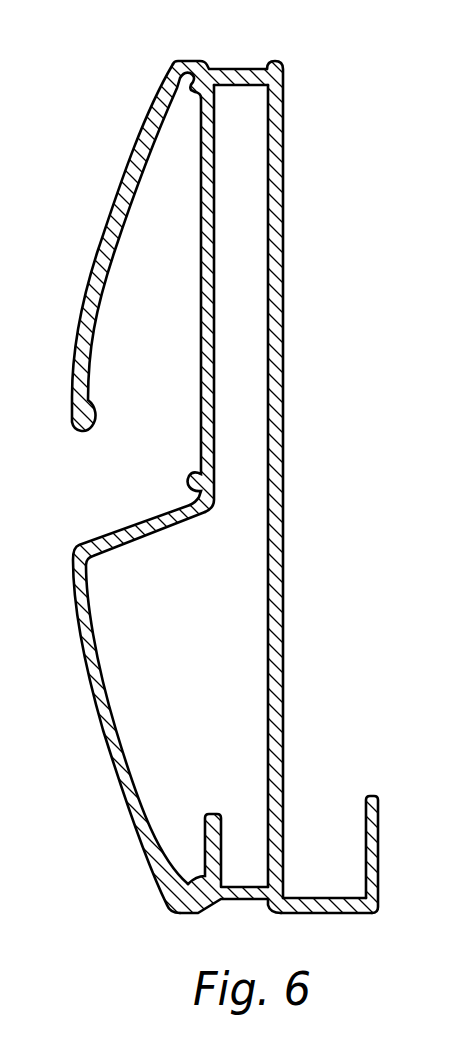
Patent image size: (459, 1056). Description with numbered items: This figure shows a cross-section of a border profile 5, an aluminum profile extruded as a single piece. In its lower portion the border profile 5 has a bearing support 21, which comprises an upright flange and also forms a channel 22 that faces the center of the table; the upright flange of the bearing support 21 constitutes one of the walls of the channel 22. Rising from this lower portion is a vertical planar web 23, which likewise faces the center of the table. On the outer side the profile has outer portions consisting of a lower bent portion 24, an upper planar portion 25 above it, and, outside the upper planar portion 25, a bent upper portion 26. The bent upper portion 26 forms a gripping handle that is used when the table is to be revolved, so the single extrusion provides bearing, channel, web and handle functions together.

The border profile 5 is at (296, 260).
The bearing support 21 is at (370, 860).
The channel 22 is at (325, 845).
The vertical planar web 23 is at (276, 368).
The lower bent portion 24 is at (113, 765).
The upper planar portion 25 is at (203, 372).
The bent upper portion 26 is at (98, 266).